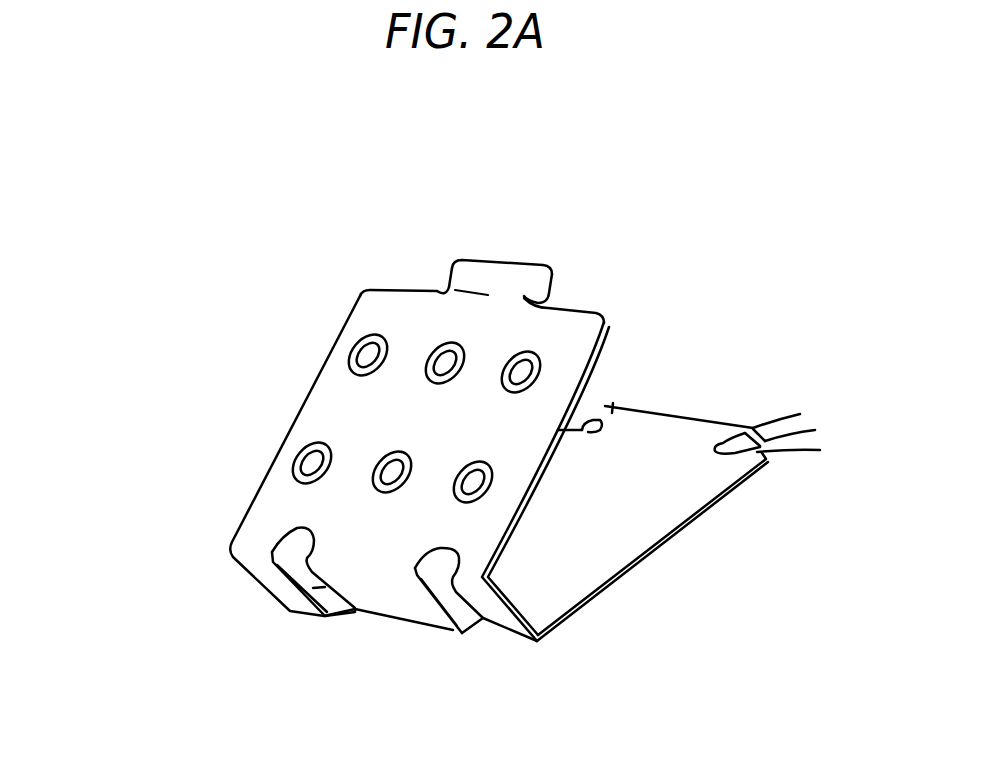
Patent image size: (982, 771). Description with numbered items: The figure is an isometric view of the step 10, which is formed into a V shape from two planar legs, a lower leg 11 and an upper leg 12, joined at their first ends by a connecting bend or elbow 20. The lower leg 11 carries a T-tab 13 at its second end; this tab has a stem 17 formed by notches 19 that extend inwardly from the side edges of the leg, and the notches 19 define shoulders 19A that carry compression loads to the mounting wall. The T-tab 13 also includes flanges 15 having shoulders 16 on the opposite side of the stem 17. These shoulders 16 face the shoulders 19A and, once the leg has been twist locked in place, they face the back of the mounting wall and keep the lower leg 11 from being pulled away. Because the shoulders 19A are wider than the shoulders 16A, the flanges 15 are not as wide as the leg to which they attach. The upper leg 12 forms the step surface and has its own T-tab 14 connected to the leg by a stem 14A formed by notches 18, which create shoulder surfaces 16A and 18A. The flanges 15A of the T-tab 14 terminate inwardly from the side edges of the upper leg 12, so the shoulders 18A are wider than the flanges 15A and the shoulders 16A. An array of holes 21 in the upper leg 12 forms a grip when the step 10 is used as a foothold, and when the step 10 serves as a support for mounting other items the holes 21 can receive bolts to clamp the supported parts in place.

The step 10 is at (178, 370).
The lower leg 11 is at (590, 545).
The upper leg 12 is at (328, 407).
The T-tab 13 is at (687, 421).
The T-tab 14 is at (502, 270).
The stem 14A is at (447, 288).
The flanges 15 is at (598, 417).
The flanges 15A is at (466, 266).
The shoulders 16 is at (585, 421).
The shoulder surfaces 16A is at (450, 283).
The stem 17 is at (663, 440).
The notches 18 is at (440, 337).
The shoulder surfaces 18A is at (385, 286).
The notches 19 is at (545, 481).
The shoulders 19A is at (592, 421).
The bend 20 is at (390, 597).
The holes 21 is at (300, 470).